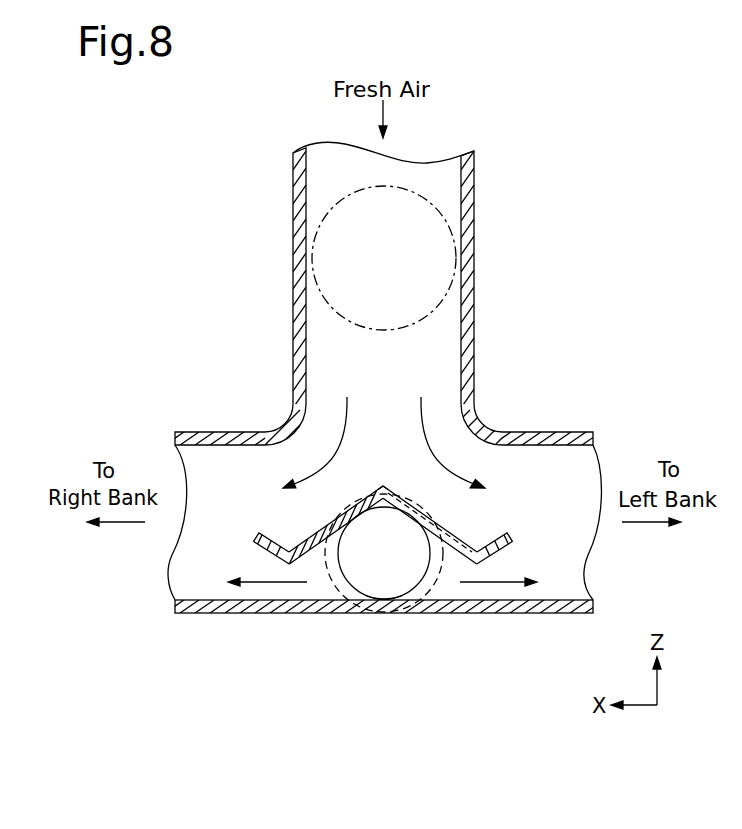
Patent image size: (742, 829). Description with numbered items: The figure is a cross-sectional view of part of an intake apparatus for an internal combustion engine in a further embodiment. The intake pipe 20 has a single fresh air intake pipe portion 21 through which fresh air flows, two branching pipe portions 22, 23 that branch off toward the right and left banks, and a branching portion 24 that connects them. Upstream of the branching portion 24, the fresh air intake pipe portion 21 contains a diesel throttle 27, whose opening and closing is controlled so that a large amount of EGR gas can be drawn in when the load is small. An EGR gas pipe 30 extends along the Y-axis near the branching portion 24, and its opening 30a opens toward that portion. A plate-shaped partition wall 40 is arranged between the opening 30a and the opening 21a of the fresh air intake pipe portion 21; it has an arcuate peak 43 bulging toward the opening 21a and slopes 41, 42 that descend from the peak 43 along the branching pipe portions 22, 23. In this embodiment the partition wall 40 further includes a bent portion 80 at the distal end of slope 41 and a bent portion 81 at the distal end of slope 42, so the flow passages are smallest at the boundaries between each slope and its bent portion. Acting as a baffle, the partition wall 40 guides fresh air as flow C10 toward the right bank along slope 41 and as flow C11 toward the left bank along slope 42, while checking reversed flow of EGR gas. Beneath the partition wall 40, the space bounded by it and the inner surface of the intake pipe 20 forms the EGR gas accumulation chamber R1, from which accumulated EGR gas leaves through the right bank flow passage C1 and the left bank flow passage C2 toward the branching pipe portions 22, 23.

The intake pipe 20 is at (384, 377).
The fresh air intake pipe portion 21 is at (476, 262).
The opening of the fresh air intake pipe portion 21a is at (452, 432).
The branching pipe portion 22 is at (203, 432).
The branching pipe portion 23 is at (565, 432).
The branching portion 24 is at (285, 424).
The diesel throttle 27 is at (412, 191).
The EGR gas pipe 30 is at (435, 583).
The opening of the EGR gas pipe 30a is at (365, 592).
The partition wall 40 is at (385, 501).
The slope 41 is at (327, 524).
The slope 42 is at (427, 517).
The peak 43 is at (383, 486).
The bent portion 80 is at (264, 547).
The bent portion 81 is at (506, 550).
The EGR gas accumulation chamber R1 is at (450, 563).
The right bank flow passage C1 is at (272, 583).
The left bank flow passage C2 is at (507, 587).
The flow C10 is at (322, 430).
The flow C11 is at (444, 430).